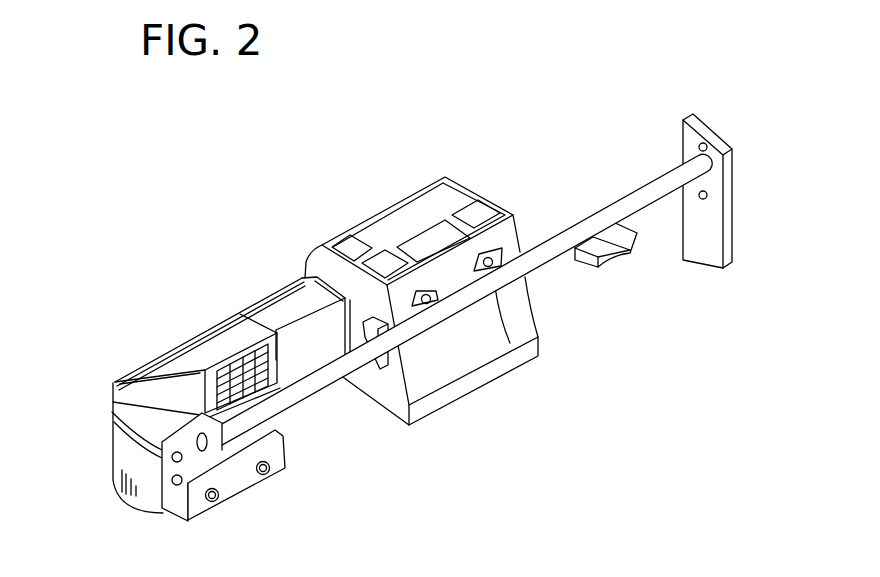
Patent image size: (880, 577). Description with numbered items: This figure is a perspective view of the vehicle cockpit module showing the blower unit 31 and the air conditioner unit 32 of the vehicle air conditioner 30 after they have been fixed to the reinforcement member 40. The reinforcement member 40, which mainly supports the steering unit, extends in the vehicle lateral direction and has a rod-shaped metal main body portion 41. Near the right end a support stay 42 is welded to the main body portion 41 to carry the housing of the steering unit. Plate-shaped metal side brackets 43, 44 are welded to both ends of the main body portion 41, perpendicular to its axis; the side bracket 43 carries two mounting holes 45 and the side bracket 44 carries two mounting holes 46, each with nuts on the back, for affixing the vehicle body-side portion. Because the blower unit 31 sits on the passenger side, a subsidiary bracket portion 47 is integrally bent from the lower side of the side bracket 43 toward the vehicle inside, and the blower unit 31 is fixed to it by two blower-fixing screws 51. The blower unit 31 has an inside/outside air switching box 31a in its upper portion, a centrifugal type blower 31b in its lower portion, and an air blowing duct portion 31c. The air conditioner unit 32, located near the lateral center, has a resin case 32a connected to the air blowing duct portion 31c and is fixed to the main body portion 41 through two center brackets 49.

The vehicle air conditioner 30 is at (284, 275).
The blower unit 31 is at (172, 333).
The inside/outside air switching box 31a is at (163, 378).
The centrifugal type blower 31b is at (133, 470).
The air blowing duct portion 31c is at (272, 310).
The air conditioner unit 32 is at (407, 196).
The resin case 32a is at (447, 373).
The reinforcement member 40 is at (544, 270).
The main body portion 41 is at (513, 370).
The support stay 42 is at (600, 268).
The side bracket 43 is at (175, 508).
The side bracket 44 is at (715, 138).
The mounting holes 45 is at (170, 455).
The mounting holes 46 is at (698, 148).
The subsidiary bracket portion 47 is at (238, 480).
The center brackets 49 is at (420, 293).
The blower-fixing screws 51 is at (213, 502).